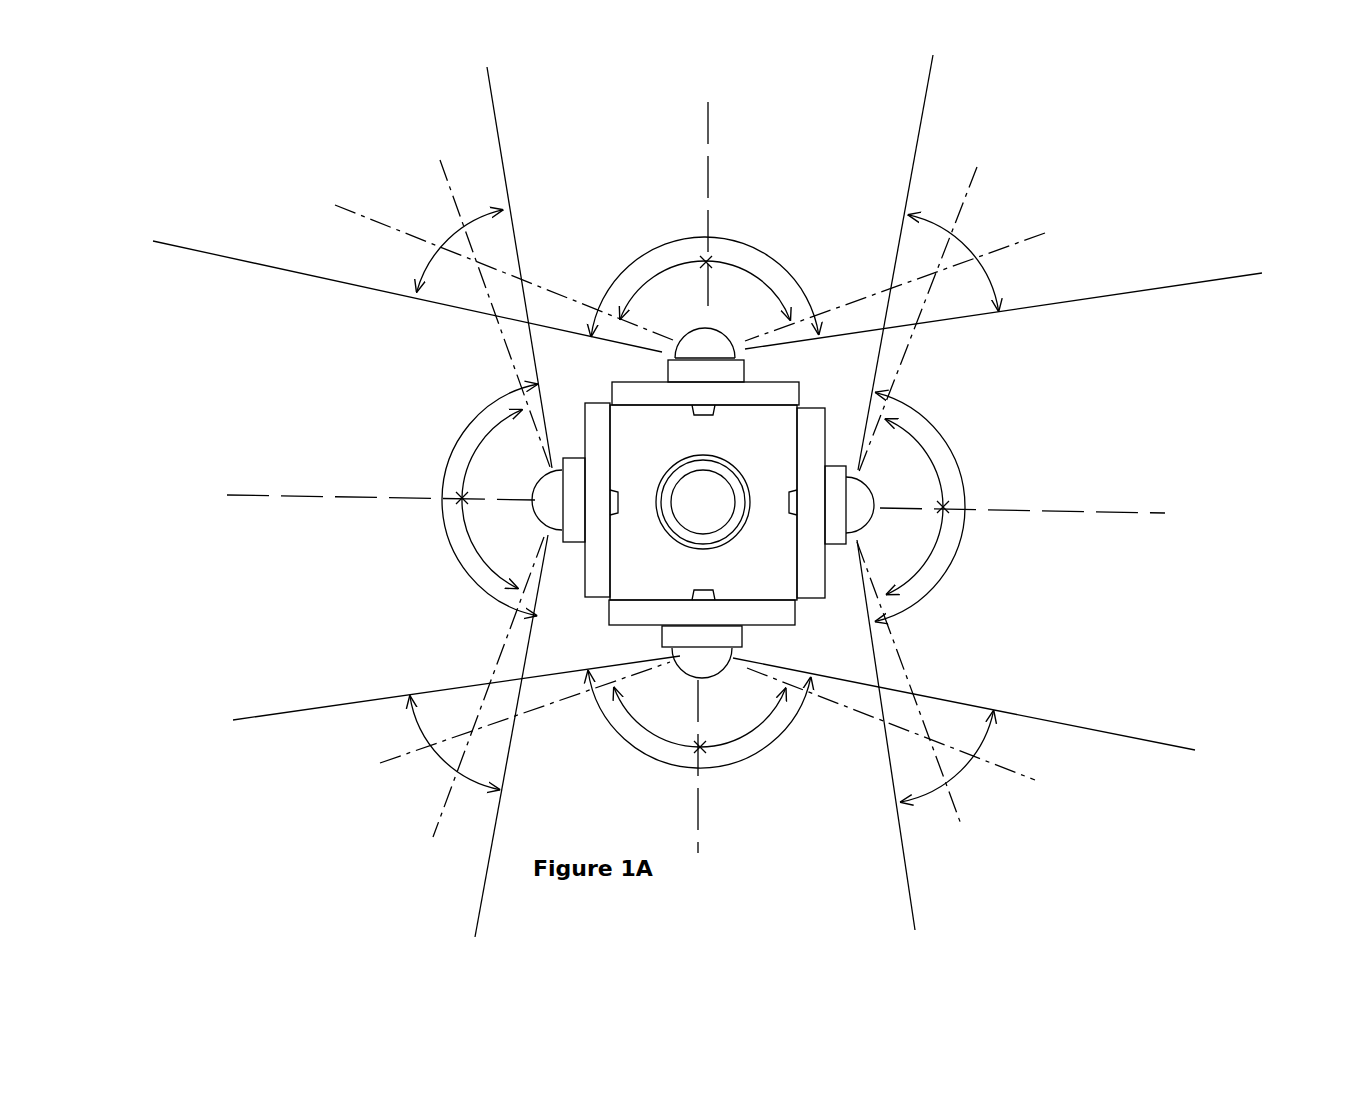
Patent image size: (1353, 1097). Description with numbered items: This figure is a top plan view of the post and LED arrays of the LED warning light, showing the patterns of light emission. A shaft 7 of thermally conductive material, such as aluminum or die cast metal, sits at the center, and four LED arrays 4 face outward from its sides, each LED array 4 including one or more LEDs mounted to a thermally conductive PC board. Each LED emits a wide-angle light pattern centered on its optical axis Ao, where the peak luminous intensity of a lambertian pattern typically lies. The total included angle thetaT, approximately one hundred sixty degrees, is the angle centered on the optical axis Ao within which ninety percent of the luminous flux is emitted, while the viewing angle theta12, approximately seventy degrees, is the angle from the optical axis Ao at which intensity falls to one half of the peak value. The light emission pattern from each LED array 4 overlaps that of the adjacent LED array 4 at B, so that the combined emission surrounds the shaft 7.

The LED array 4 is at (597, 418).
The shaft 7 is at (761, 461).
The optical axis Ao is at (710, 122).
The overlap of light emission patterns B is at (465, 250).
The total included angle thetaT is at (462, 437).
The viewing angle theta12 is at (473, 553).